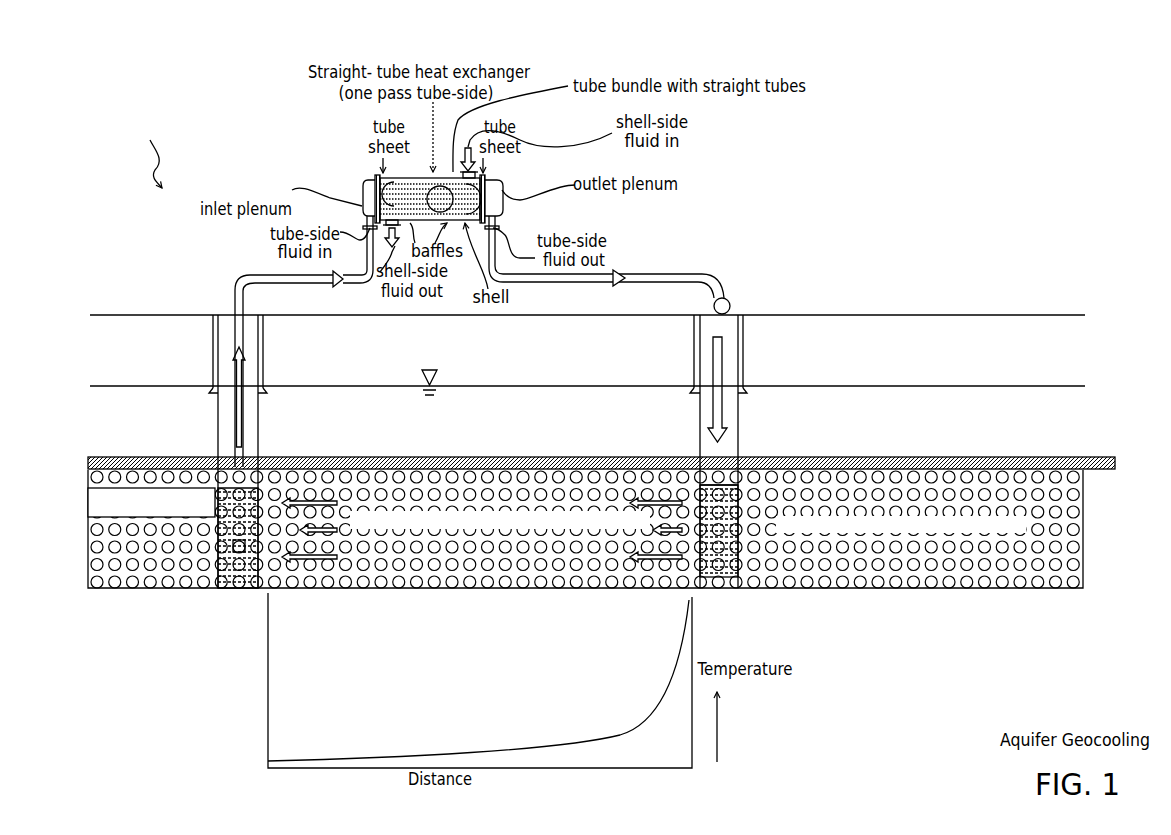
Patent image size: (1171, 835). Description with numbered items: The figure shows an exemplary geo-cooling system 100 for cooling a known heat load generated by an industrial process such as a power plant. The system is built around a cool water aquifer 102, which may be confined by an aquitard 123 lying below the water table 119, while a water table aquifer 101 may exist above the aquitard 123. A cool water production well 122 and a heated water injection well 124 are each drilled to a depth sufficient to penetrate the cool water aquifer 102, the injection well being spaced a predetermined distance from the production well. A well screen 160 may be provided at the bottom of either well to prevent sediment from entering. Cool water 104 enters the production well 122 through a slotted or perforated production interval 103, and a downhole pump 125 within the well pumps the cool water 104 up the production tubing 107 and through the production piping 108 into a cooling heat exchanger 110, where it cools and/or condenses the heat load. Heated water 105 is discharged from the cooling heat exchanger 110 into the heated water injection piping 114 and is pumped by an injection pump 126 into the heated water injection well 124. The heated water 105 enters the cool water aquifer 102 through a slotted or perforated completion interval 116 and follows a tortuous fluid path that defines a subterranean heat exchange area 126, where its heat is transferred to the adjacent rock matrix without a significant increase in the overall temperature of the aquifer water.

The geo-cooling system 100 is at (150, 141).
The water table aquifer 101 is at (527, 446).
The cool water aquifer 102 is at (105, 500).
The production interval 103 is at (218, 542).
The cool water 104 is at (244, 407).
The heated water 105 is at (723, 372).
The production tubing 107 is at (256, 352).
The production piping 108 is at (224, 289).
The cooling heat exchanger 110 is at (357, 182).
The heated water injection piping 114 is at (718, 274).
The completion interval 116 is at (740, 544).
The water table 119 is at (587, 378).
The cool water production well 122 is at (211, 430).
The aquitard 123 is at (433, 448).
The heated water injection well 124 is at (746, 436).
The downhole pump 125 is at (247, 553).
The injection pump 126 is at (815, 292).
The well screen 160 is at (255, 588).